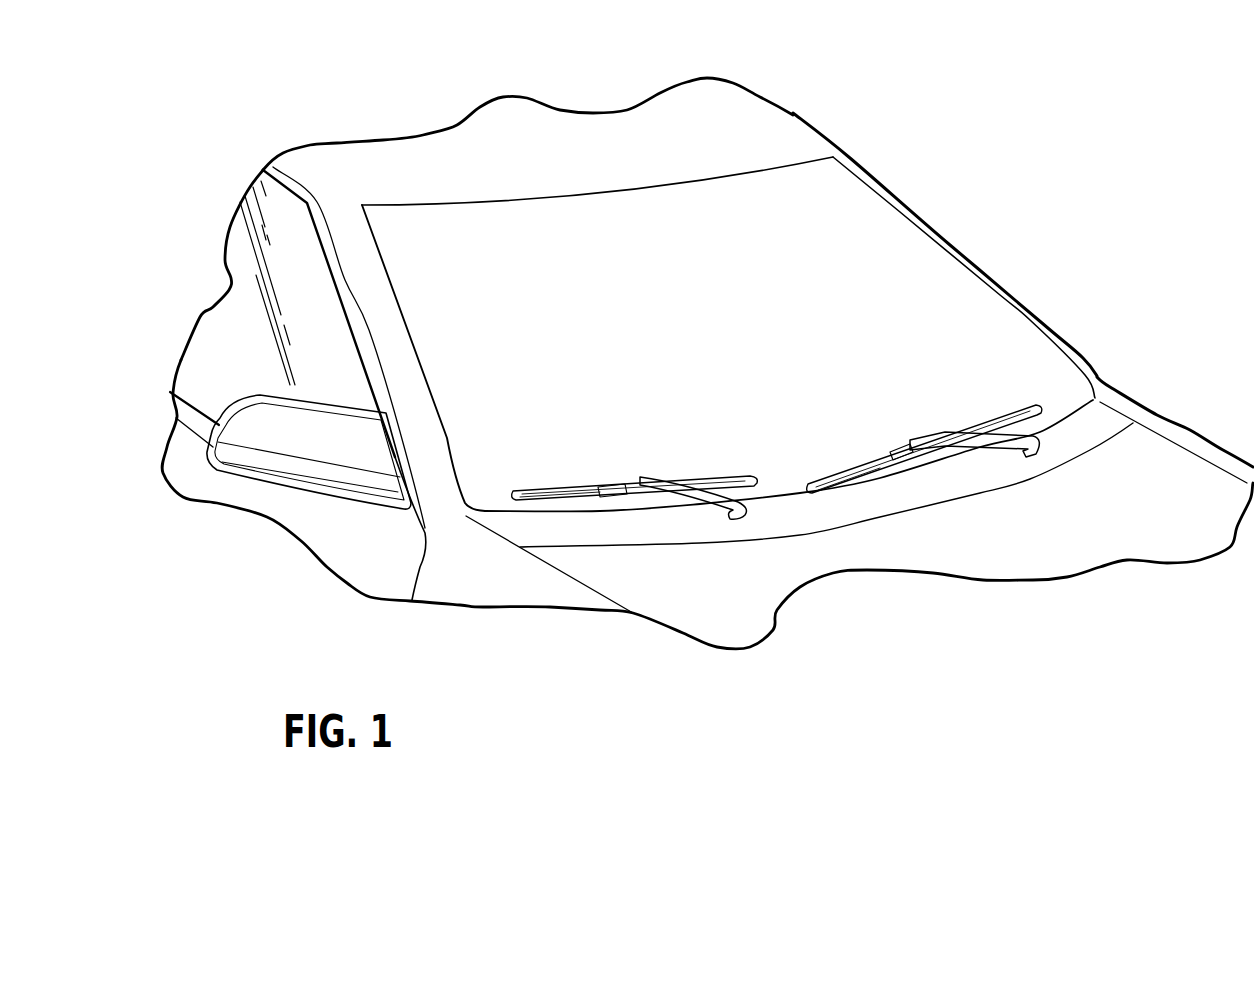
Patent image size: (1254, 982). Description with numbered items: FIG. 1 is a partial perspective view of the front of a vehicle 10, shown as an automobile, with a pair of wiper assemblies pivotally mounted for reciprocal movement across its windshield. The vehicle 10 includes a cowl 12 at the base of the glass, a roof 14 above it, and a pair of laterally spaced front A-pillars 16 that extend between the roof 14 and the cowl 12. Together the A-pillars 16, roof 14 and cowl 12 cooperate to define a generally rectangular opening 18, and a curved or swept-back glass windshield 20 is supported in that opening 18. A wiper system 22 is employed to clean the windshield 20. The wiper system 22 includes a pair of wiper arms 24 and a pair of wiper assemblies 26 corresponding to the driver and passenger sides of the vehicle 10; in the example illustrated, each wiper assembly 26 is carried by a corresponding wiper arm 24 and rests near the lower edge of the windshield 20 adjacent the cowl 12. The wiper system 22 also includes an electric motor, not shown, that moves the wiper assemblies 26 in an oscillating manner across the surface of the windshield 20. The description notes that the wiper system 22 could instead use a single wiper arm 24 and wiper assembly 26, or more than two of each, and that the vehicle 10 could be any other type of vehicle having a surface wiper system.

The vehicle 10 is at (1131, 188).
The cowl 12 is at (1105, 423).
The roof 14 is at (780, 133).
The front A-pillars 16 is at (1030, 320).
The generally rectangular opening 18 is at (946, 250).
The glass windshield 20 is at (651, 280).
The wiper system 22 is at (819, 539).
The wiper arms 24 is at (714, 512).
The wiper assemblies 26 is at (543, 488).